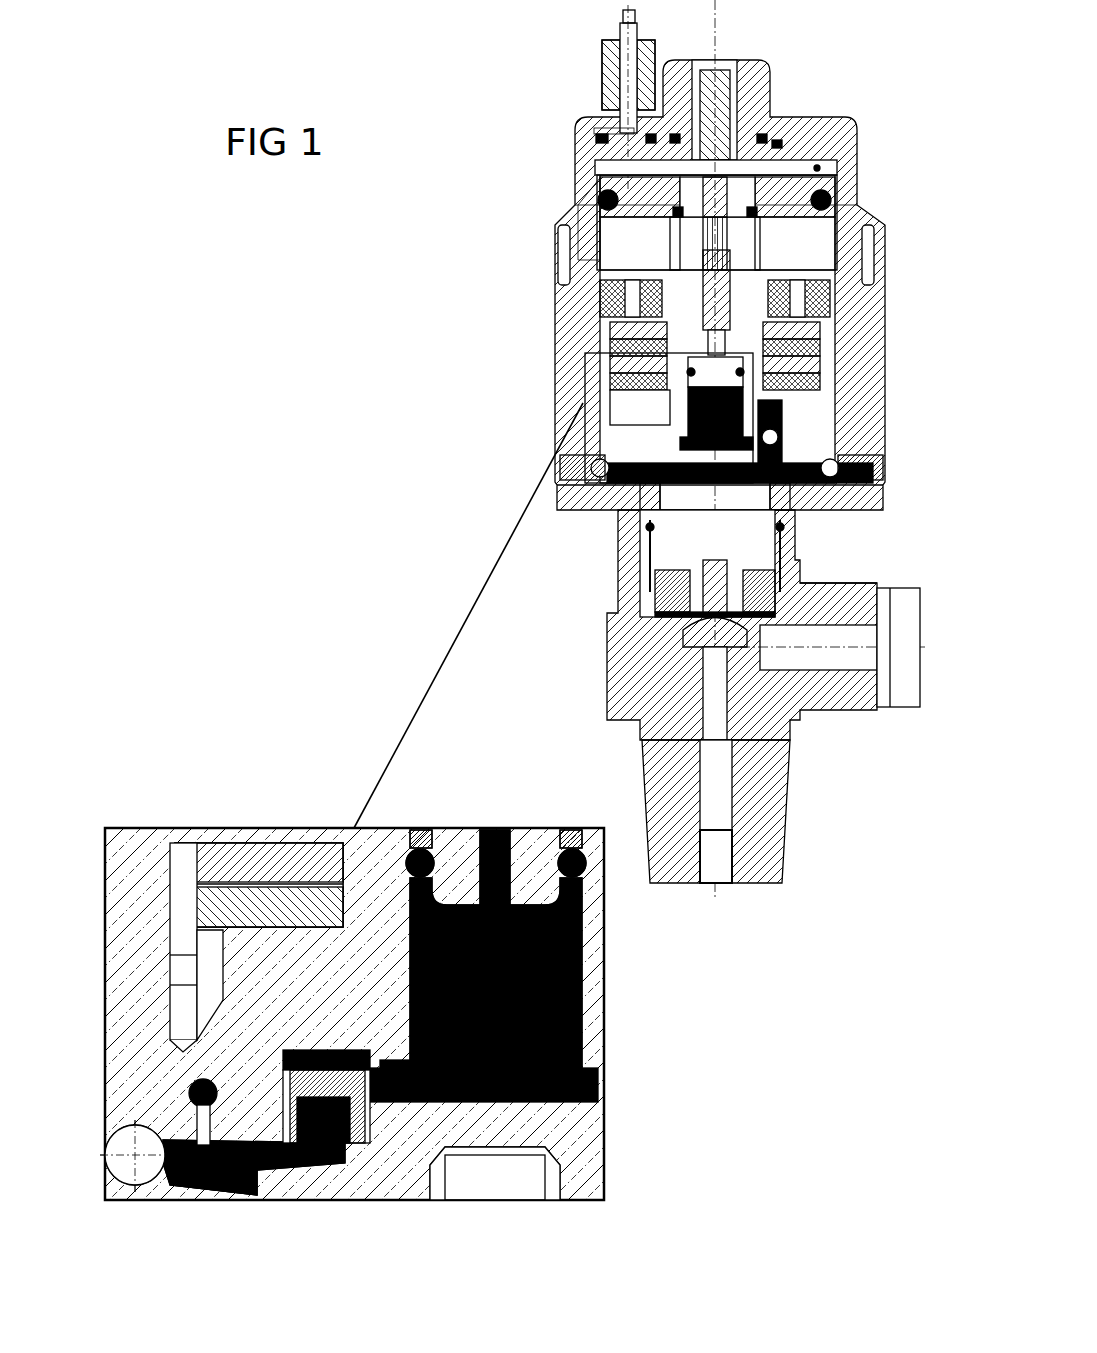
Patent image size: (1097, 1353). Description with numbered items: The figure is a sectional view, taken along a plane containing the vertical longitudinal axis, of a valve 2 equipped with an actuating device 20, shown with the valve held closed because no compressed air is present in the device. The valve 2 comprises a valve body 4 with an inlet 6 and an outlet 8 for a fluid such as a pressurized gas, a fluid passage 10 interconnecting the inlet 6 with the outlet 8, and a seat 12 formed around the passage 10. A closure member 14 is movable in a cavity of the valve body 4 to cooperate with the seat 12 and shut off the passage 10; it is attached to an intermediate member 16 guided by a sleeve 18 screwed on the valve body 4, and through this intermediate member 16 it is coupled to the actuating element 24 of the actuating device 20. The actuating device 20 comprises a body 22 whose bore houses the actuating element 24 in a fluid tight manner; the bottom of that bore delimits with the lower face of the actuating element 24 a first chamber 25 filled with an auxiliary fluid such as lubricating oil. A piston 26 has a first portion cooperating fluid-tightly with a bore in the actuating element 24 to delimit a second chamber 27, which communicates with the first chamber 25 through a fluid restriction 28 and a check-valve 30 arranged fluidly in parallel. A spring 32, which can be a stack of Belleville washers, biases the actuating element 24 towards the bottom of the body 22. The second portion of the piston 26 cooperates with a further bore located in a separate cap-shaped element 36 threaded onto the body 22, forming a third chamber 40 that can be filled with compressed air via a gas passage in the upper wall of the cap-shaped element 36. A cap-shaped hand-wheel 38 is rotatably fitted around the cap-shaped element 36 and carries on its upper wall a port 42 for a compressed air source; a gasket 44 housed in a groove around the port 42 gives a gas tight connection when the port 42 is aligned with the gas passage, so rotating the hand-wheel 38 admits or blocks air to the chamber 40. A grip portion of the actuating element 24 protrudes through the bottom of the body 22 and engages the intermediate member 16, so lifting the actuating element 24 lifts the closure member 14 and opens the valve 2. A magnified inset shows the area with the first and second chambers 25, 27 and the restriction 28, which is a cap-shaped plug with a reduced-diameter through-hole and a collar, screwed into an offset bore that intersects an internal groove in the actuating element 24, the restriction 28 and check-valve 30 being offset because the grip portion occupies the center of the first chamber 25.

The valve 2 is at (320, 353).
The valve body 4 is at (612, 680).
The inlet 6 is at (715, 886).
The outlet 8 is at (908, 665).
The fluid passage 10 is at (722, 760).
The seat 12 is at (700, 655).
The closure member 14 is at (700, 630).
The intermediate member 16 is at (690, 583).
The sleeve 18 is at (765, 588).
The actuating device 20 is at (452, 262).
The body 22 is at (842, 362).
The actuating element 24 is at (688, 430).
The first chamber 25 is at (210, 1198).
The piston 26 is at (665, 262).
The second chamber 27 is at (597, 1008).
The fluid restriction (plug) 28 is at (603, 450).
The check-valve 30 is at (792, 432).
The spring 32 is at (612, 340).
The cap-shaped element 36 is at (800, 140).
The cap-shaped hand-wheel 38 is at (572, 208).
The third chamber 40 is at (822, 168).
The port 42 is at (574, 76).
The gasket 44 is at (640, 147).